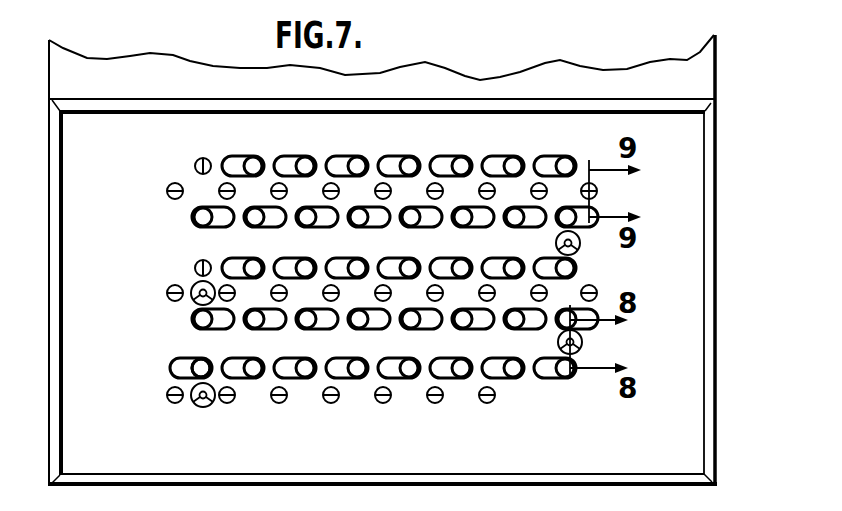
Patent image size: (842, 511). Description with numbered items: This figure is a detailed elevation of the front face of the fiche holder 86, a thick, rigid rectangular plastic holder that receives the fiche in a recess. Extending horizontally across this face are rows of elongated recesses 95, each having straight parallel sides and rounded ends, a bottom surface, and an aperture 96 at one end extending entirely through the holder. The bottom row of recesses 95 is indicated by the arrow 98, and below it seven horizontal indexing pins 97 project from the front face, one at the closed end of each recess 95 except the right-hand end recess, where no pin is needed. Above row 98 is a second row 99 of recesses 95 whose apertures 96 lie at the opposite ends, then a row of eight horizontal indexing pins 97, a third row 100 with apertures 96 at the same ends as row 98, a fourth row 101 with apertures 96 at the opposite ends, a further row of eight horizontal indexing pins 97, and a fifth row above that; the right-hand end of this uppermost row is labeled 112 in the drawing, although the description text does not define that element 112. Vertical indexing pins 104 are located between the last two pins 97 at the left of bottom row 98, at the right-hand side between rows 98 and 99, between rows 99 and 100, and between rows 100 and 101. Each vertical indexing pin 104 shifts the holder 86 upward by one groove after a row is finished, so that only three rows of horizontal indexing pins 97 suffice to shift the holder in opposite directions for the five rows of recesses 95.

The fiche holder 86 is at (745, 99).
The elongated recess 95 is at (186, 361).
The aperture 96 is at (208, 361).
The horizontal indexing pin 97 is at (167, 398).
The bottom row of recesses 98 is at (339, 356).
The second row of recesses 99 is at (596, 333).
The third row of recesses 100 is at (594, 268).
The fourth row of recesses 101 is at (606, 191).
The vertical indexing pin 104 is at (556, 243).
The slot end 112 is at (588, 152).